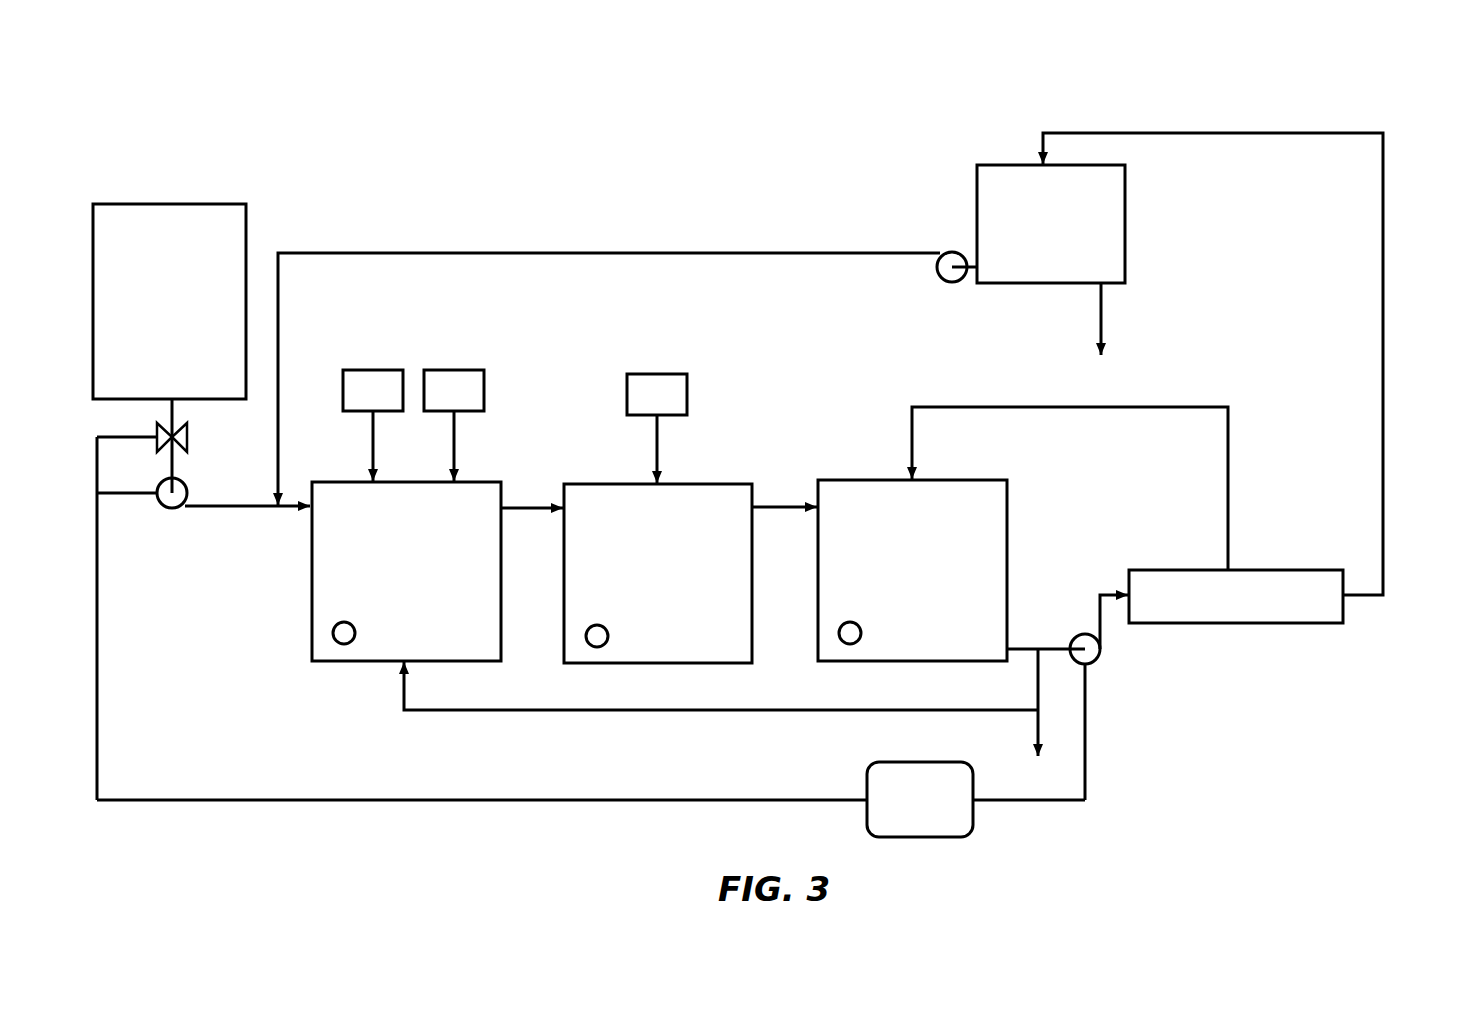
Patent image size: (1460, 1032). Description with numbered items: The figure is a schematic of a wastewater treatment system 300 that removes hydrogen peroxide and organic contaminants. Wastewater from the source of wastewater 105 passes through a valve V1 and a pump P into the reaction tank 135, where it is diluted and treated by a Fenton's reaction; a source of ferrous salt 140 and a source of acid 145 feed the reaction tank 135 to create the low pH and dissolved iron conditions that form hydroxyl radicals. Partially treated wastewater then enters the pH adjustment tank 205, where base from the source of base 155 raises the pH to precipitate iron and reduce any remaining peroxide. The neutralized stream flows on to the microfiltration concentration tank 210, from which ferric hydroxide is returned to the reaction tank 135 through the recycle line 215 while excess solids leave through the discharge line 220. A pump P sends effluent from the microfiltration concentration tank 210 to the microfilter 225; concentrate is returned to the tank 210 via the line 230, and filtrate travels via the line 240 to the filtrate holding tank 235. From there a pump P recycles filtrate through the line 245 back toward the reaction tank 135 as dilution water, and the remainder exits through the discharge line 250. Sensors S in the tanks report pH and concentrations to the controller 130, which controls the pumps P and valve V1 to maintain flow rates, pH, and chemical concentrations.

The system 300 is at (294, 118).
The source of wastewater 105 is at (169, 301).
The valve V1 is at (158, 443).
The pump P is at (163, 506).
The sensor S is at (335, 643).
The reaction tank 135 is at (406, 571).
The source of ferrous salt 140 is at (373, 425).
The source of acid 145 is at (454, 425).
The source of base 155 is at (657, 428).
The pH adjustment tank 205 is at (658, 573).
The microfiltration concentration tank 210 is at (912, 570).
The recycle line 215 is at (510, 716).
The discharge line 220 is at (1036, 720).
The microfilter 225 is at (1236, 596).
The line 230 is at (957, 406).
The filtrate holding tank 235 is at (1051, 224).
The line 240 is at (1387, 478).
The recycle line 245 is at (614, 252).
The discharge line 250 is at (1105, 328).
The controller 130 is at (920, 799).